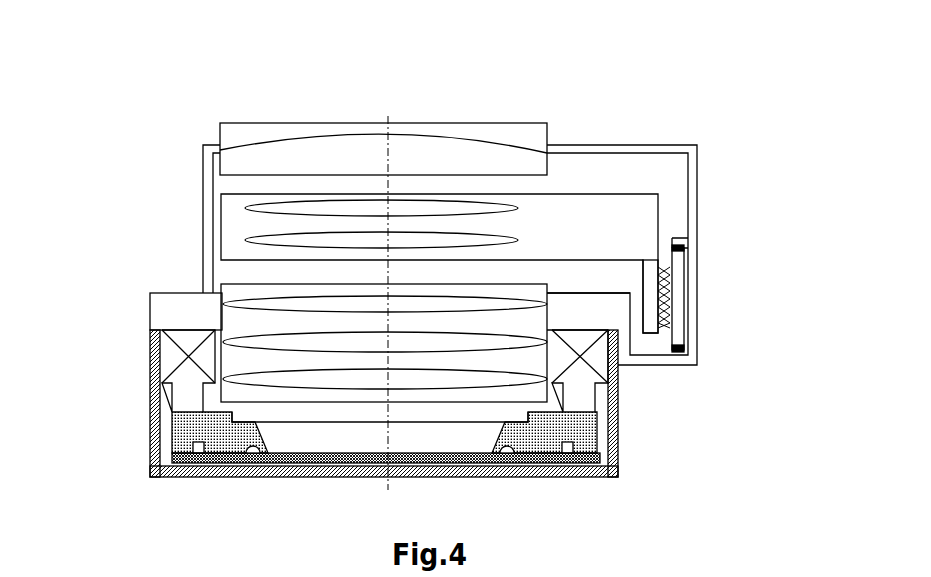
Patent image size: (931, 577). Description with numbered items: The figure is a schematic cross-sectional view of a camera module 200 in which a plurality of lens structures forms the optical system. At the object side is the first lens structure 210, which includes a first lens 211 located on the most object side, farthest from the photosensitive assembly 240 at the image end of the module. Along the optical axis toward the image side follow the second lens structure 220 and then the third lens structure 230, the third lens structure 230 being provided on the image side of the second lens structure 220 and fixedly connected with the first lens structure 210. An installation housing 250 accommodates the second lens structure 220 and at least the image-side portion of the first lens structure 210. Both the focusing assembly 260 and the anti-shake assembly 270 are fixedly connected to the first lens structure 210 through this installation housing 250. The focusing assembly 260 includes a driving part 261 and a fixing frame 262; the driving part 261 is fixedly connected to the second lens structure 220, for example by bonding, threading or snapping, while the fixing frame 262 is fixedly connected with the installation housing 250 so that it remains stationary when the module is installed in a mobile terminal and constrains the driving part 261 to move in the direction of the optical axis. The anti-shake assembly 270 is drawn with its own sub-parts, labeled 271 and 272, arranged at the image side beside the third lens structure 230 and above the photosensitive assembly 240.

The camera module 200 is at (390, 269).
The first lens structure 210 is at (547, 143).
The first lens 211 is at (505, 130).
The second lens structure 220 is at (247, 212).
The third lens structure 230 is at (241, 297).
The photosensitive assembly 240 is at (597, 462).
The installation housing 250 is at (645, 365).
The focusing assembly 260 is at (770, 200).
The driving part 261 is at (640, 225).
The fixing frame 262 is at (678, 272).
The anti-shake assembly 270 is at (92, 287).
The coil 271 is at (155, 332).
The magnet 272 is at (177, 312).